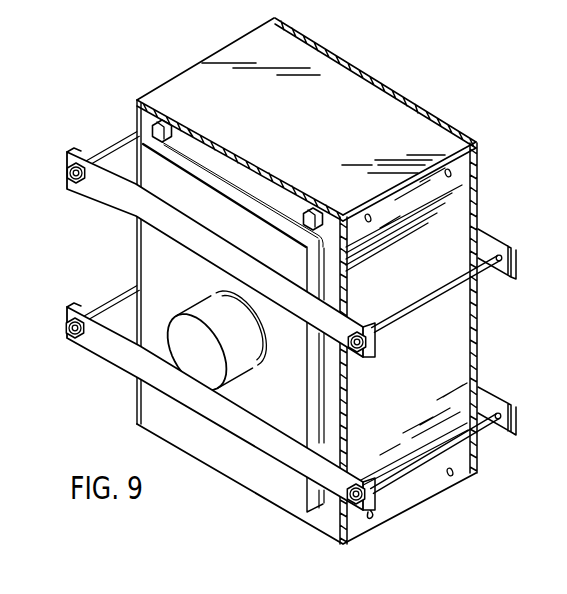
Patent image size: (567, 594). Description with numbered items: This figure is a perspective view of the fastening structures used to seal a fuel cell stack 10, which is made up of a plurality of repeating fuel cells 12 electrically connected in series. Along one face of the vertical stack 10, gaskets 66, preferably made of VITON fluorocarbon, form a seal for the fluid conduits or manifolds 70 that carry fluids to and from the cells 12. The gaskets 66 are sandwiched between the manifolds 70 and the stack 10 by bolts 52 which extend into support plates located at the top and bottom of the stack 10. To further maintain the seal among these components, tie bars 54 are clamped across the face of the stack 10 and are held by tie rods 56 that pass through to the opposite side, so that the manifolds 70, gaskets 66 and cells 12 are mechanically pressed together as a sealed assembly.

The stack 10 is at (291, 281).
The fuel cell 12 is at (440, 196).
The bolt 52 is at (152, 125).
The tie bar 54 is at (116, 199).
The tie rod 56 is at (482, 274).
The gasket 66 is at (236, 151).
The manifold 70 is at (176, 286).